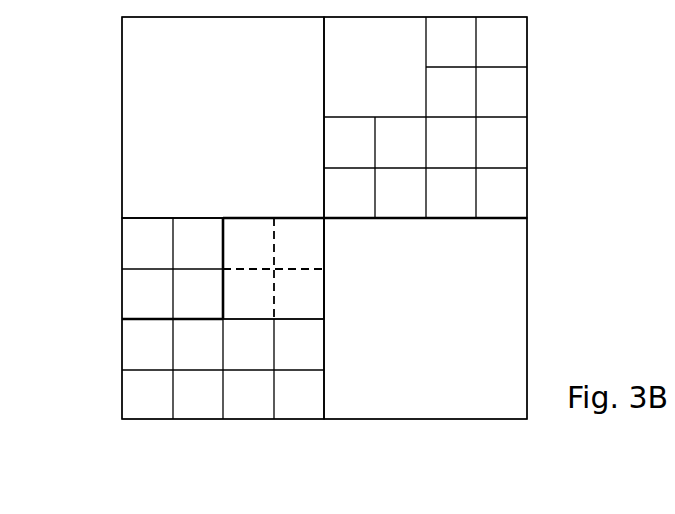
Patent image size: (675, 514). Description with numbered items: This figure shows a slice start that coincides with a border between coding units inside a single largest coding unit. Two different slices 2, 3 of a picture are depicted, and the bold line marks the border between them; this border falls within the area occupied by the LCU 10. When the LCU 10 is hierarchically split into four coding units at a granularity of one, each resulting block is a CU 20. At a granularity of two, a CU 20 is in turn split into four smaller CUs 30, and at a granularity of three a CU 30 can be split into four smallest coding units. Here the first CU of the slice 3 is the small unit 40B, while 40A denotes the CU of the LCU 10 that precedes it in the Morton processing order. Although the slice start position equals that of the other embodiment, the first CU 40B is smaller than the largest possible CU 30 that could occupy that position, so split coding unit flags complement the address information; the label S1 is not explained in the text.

The coding unit 20 is at (122, 120).
The largest coding unit 10 is at (122, 220).
The slice 2 is at (527, 118).
The slice 3 is at (527, 320).
The coding unit 30 is at (324, 268).
The preceding coding unit 40A is at (219, 307).
The first coding unit 40B is at (271, 256).
The side/row label S1 is at (662, 94).